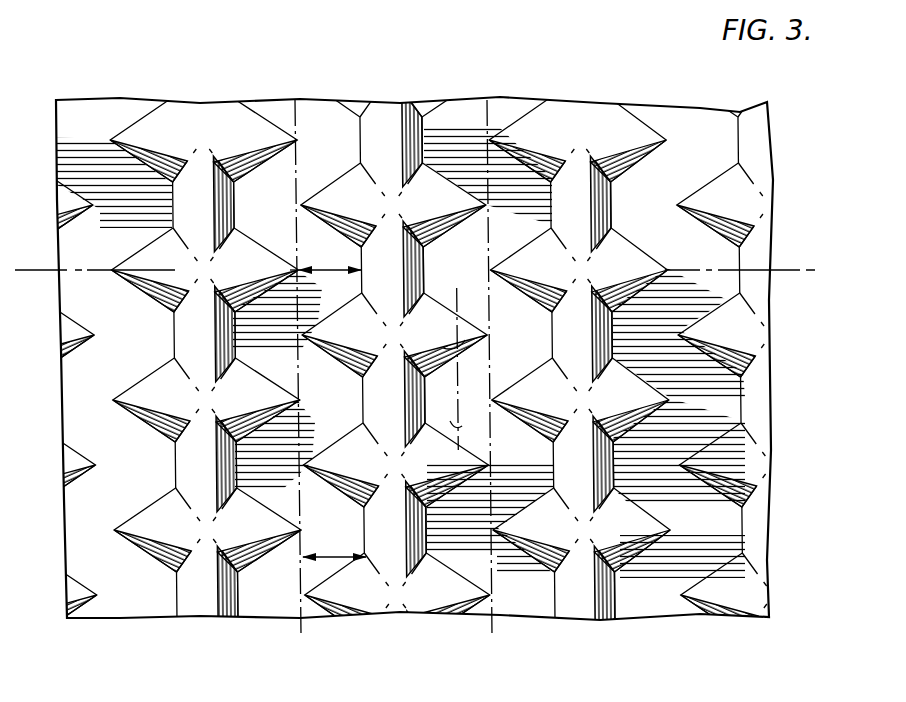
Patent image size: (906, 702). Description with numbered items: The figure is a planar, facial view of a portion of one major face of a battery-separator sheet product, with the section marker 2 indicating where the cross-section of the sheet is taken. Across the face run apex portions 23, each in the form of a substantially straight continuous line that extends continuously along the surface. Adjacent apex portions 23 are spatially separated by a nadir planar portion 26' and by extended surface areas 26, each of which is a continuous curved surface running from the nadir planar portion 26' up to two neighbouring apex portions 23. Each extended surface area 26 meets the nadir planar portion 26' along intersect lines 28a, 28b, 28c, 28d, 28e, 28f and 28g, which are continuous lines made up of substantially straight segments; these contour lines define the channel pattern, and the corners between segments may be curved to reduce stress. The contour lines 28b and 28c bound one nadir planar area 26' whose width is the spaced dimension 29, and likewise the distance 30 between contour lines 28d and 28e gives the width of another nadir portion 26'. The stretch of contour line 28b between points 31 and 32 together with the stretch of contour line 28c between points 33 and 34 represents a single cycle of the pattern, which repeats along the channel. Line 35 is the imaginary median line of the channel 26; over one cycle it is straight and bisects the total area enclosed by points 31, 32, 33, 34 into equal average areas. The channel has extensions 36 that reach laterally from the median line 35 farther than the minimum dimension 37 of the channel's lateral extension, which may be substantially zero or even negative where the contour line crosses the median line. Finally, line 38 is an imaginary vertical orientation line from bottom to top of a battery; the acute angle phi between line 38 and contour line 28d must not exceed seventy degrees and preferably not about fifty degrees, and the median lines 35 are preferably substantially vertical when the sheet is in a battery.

The section line 2- 2 is at (38, 298).
The apex portion 23 is at (198, 128).
The extended surface area 26 is at (313, 335).
The nadir planar portion 26' is at (465, 379).
The intersect line 28a is at (177, 592).
The intersect contour line 28b is at (247, 574).
The intersect contour line 28c is at (320, 612).
The intersect contour line 28d is at (482, 610).
The intersect contour line 28e is at (547, 602).
The intersect line 28f is at (625, 597).
The intersect line 28g is at (692, 612).
The spaced dimension 29 is at (325, 256).
The distance 30 is at (496, 270).
The point 31 is at (298, 400).
The point 32 is at (298, 529).
The point 33 is at (365, 529).
The point 34 is at (362, 398).
The imaginary median line 35 is at (392, 381).
The extension 36 is at (337, 556).
The minimum dimension 37 is at (299, 422).
The imaginary vertical orientation line 38 is at (460, 438).